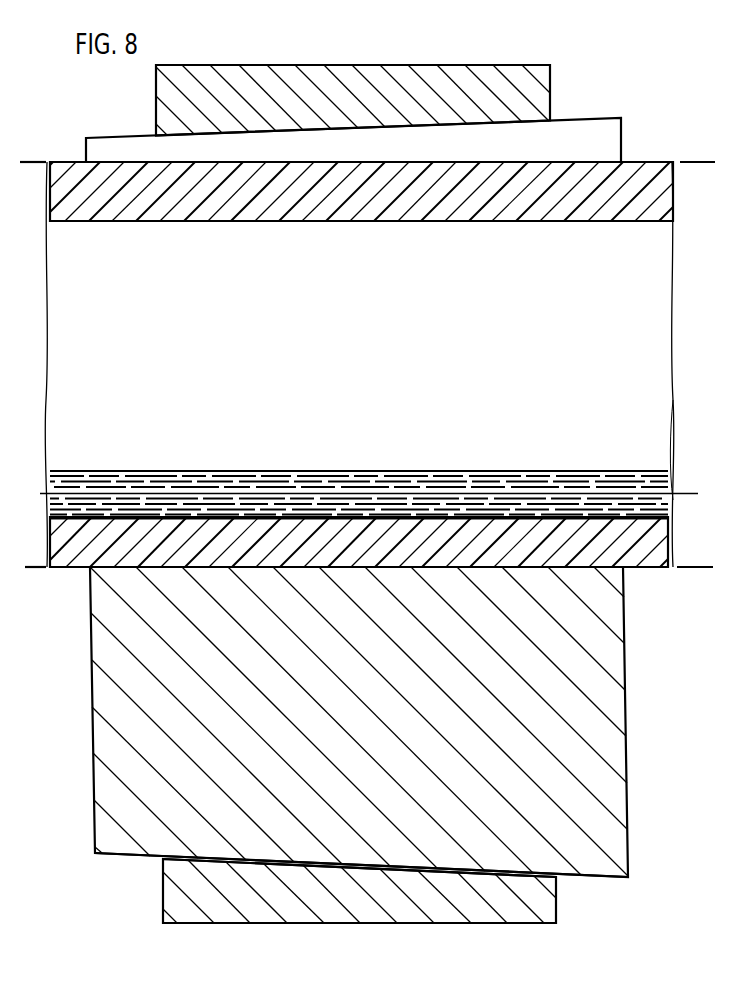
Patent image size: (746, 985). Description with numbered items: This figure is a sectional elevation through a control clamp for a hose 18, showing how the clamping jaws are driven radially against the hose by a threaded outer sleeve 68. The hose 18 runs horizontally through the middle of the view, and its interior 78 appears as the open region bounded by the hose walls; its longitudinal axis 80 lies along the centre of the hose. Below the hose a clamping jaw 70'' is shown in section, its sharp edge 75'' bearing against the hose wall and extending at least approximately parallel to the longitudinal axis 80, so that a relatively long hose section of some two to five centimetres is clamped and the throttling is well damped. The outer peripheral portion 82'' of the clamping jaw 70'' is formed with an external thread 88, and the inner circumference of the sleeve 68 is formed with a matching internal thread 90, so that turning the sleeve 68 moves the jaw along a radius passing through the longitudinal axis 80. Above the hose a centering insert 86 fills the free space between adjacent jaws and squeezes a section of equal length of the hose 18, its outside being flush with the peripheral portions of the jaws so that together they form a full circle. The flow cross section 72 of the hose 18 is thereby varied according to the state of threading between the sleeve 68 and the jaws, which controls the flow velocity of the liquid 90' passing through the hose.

The hose 18 is at (656, 193).
The outer sleeve 68 is at (393, 78).
The interior space 78 is at (527, 324).
The longitudinal axis 80 is at (255, 495).
The centering insert 86 is at (606, 135).
The liquid 90' is at (360, 474).
The flow cross section 72 is at (688, 483).
The clamping jaw 70'' is at (379, 722).
The sharp edge 75'' is at (356, 604).
The external thread 88 is at (523, 870).
The outer peripheral portion 82'' is at (129, 880).
The internal thread 90 is at (359, 910).